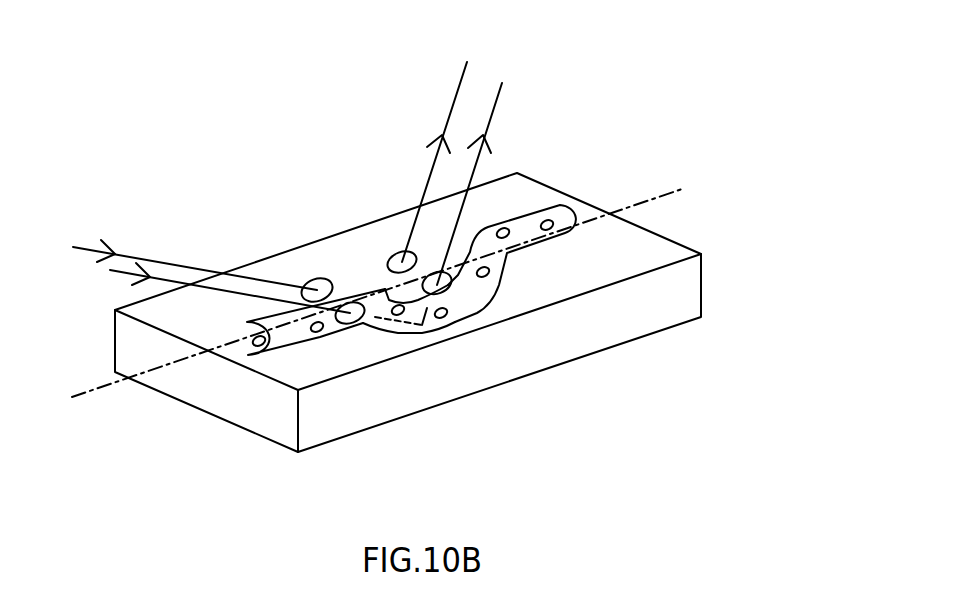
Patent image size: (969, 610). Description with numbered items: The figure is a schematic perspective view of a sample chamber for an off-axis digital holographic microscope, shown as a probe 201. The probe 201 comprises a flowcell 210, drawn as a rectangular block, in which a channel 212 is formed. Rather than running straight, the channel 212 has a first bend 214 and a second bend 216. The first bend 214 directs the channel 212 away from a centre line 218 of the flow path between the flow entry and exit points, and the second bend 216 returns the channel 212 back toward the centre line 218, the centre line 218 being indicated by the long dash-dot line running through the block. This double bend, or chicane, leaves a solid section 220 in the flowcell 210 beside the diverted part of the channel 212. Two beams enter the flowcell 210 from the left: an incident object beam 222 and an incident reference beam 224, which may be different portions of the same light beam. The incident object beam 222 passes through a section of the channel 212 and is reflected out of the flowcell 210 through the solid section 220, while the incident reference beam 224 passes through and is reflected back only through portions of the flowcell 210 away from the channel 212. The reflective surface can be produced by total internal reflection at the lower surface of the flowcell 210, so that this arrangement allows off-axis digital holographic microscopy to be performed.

The probe 201 is at (785, 194).
The flowcell 210 is at (635, 243).
The channel 212 is at (470, 298).
The first bend 214 is at (397, 332).
The second bend 216 is at (490, 250).
The centre line 218 is at (110, 383).
The solid section 220 is at (457, 272).
The incident object beam 222 is at (125, 273).
The incident reference beam 224 is at (128, 257).